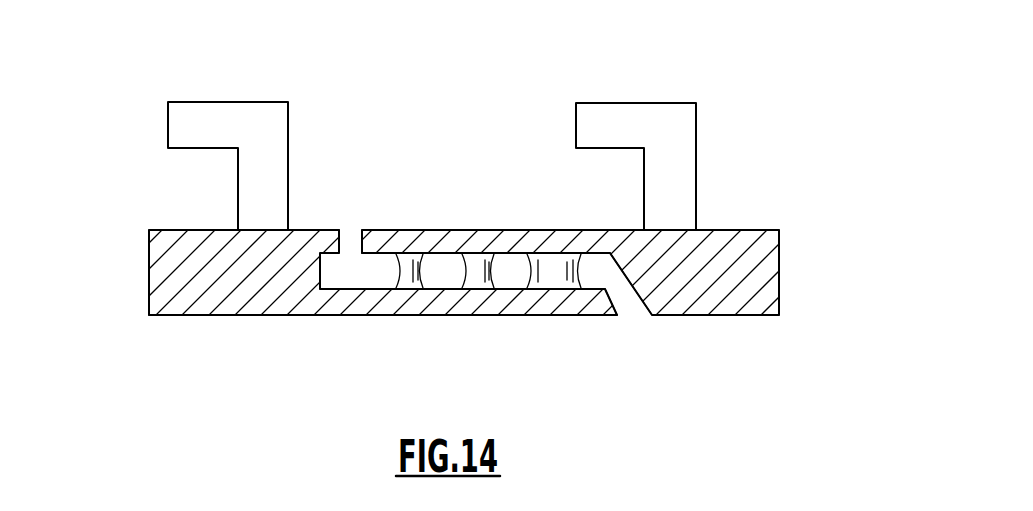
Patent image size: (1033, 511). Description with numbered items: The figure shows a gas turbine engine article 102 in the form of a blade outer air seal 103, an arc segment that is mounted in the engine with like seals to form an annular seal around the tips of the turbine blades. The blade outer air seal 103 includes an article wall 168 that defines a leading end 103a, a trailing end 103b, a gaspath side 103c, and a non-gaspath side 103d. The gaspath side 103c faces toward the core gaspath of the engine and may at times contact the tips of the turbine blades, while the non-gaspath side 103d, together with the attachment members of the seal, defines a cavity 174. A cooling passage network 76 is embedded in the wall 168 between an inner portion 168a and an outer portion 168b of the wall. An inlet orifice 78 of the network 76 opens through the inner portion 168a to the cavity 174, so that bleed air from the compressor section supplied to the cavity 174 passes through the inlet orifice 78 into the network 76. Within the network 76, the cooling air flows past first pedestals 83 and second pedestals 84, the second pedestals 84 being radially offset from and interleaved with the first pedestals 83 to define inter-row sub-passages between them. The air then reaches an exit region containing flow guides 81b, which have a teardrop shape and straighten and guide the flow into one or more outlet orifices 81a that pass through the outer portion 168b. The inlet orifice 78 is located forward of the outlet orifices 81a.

The gas turbine engine article 102 is at (337, 323).
The blade outer air seal 103 is at (764, 221).
The leading end 103a is at (149, 265).
The trailing end 103b is at (779, 272).
The gaspath side 103c is at (243, 315).
The non-gaspath side 103d is at (307, 230).
The article wall 168 is at (715, 285).
The inner portion of the wall 168a is at (288, 127).
The outer portion of the wall 168b is at (696, 127).
The cavity 174 is at (466, 166).
The inlet orifice 78 is at (340, 243).
The cooling passage network 76 is at (442, 262).
The first pedestals 83 is at (396, 275).
The second pedestals 84 is at (464, 275).
The outlet orifices 81a is at (610, 293).
The flow guides 81b is at (526, 274).